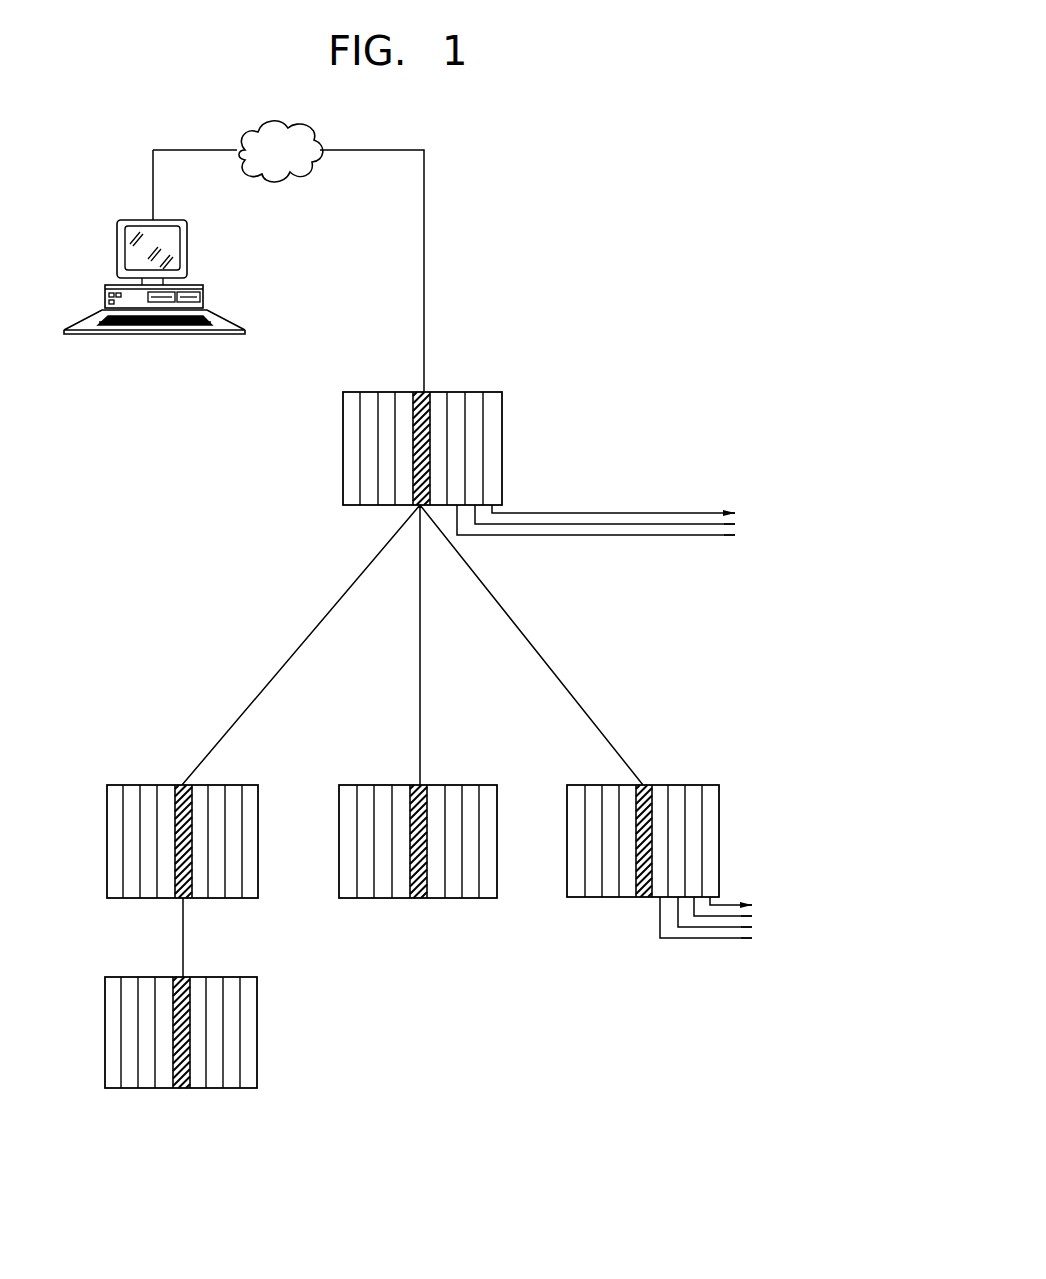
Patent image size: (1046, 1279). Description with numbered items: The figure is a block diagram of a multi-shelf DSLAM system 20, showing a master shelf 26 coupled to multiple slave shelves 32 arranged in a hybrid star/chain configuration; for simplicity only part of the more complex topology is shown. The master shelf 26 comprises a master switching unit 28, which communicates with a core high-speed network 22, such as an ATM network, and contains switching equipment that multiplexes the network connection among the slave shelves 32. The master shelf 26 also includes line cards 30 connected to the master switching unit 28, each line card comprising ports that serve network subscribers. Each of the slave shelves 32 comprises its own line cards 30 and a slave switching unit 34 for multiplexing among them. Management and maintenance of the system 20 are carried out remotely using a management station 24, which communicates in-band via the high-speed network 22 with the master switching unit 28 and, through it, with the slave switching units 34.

The multi-shelf DSLAM system 20 is at (737, 228).
The core high-speed network 22 is at (262, 180).
The management station 24 is at (117, 245).
The master shelf 26 is at (518, 458).
The master switching unit 28 is at (425, 392).
The line cards 30 is at (458, 392).
The slave shelves 32 is at (792, 690).
The slave switching unit 34 is at (183, 785).